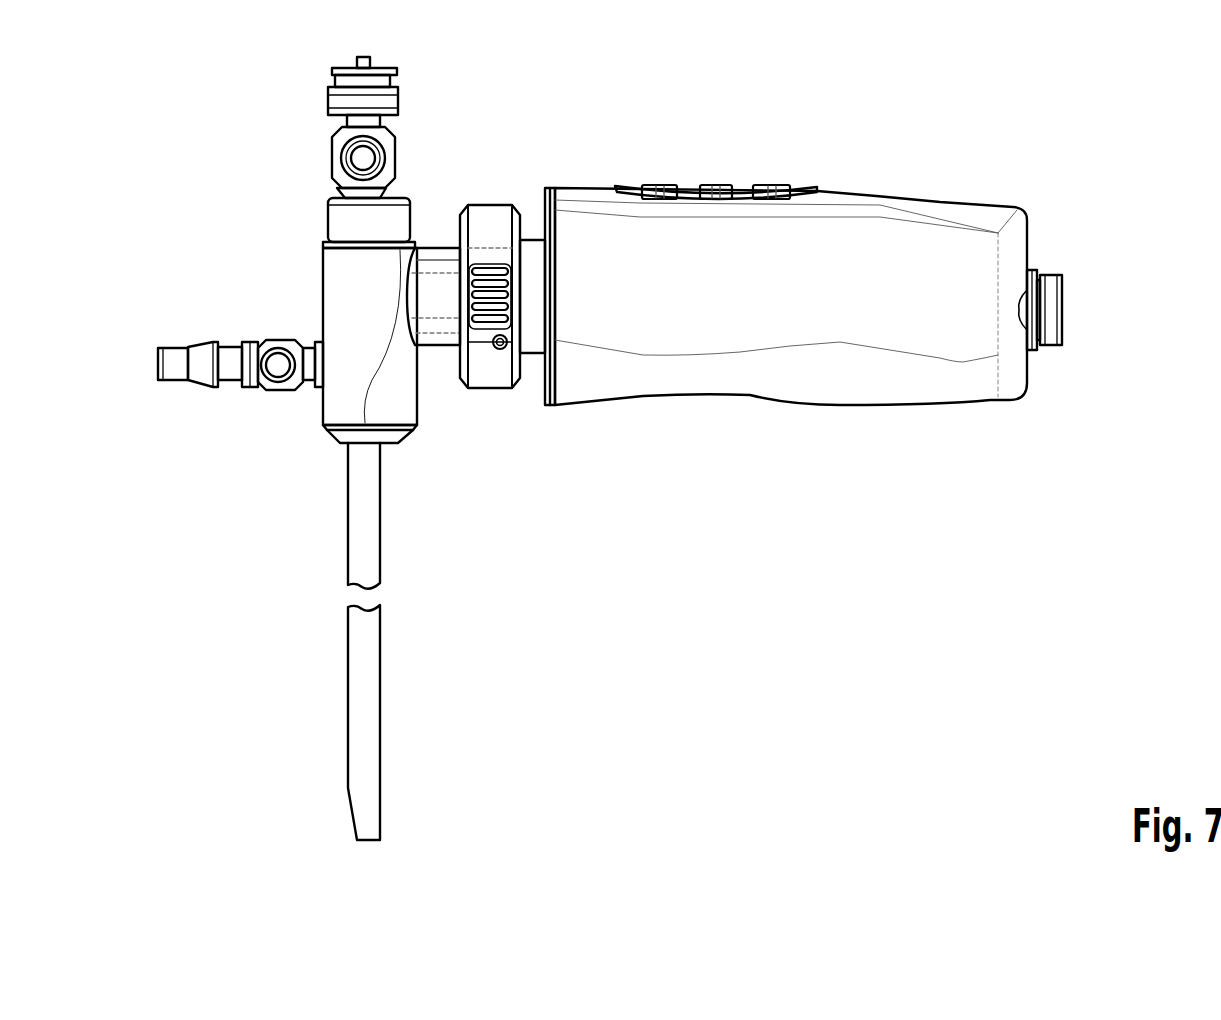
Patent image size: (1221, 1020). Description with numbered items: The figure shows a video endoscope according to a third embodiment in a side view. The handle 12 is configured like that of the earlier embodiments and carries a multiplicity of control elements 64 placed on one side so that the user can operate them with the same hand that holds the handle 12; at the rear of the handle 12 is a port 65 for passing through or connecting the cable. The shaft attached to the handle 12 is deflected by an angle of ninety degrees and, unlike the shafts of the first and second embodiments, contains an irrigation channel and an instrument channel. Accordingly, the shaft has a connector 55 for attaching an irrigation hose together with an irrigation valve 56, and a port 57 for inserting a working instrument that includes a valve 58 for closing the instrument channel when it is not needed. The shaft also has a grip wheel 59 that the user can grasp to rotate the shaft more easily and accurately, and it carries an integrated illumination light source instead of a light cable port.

The handle 12 is at (914, 152).
The connector 55 is at (168, 348).
The irrigation valve 56 is at (276, 345).
The port 57 is at (330, 73).
The valve 58 is at (340, 158).
The grip wheel 59 is at (490, 205).
The control elements 64 is at (658, 185).
The port 65 is at (1048, 275).